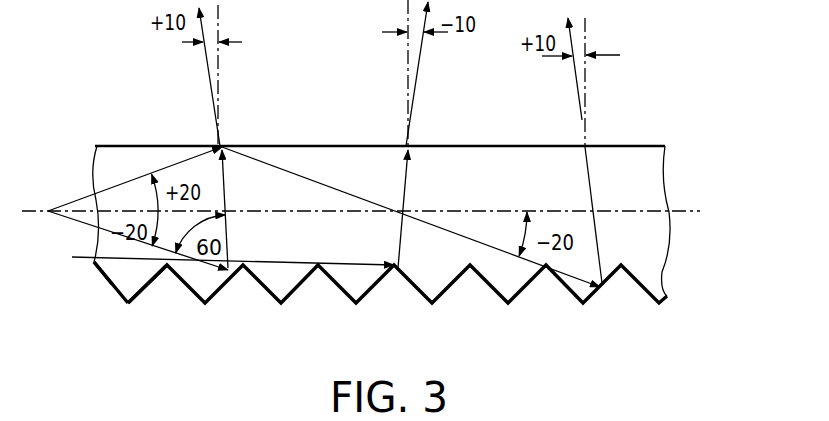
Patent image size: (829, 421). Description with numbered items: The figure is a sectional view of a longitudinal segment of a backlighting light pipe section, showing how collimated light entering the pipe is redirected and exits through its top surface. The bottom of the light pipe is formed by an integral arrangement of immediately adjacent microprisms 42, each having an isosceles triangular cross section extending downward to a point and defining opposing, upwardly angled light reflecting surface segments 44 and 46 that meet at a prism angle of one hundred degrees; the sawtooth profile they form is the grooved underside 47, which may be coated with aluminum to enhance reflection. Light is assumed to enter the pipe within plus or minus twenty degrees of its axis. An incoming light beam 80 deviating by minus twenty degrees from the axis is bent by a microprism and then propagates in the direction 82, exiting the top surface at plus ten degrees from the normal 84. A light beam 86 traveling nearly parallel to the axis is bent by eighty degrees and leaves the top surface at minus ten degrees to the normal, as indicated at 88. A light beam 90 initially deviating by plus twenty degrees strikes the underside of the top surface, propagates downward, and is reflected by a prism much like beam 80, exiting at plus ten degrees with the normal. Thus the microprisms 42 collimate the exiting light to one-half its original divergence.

The microprism 42 is at (112, 268).
The light reflecting surface segment 44 is at (123, 295).
The light reflecting surface segment 46 is at (142, 283).
The grooved underside 47 is at (447, 292).
The incoming light beam 80 is at (78, 223).
The propagation direction 82 is at (212, 103).
The normal 84 is at (218, 78).
The light beam 86 is at (286, 264).
The exit direction of light beam 88 is at (418, 82).
The light beam 90 is at (118, 172).